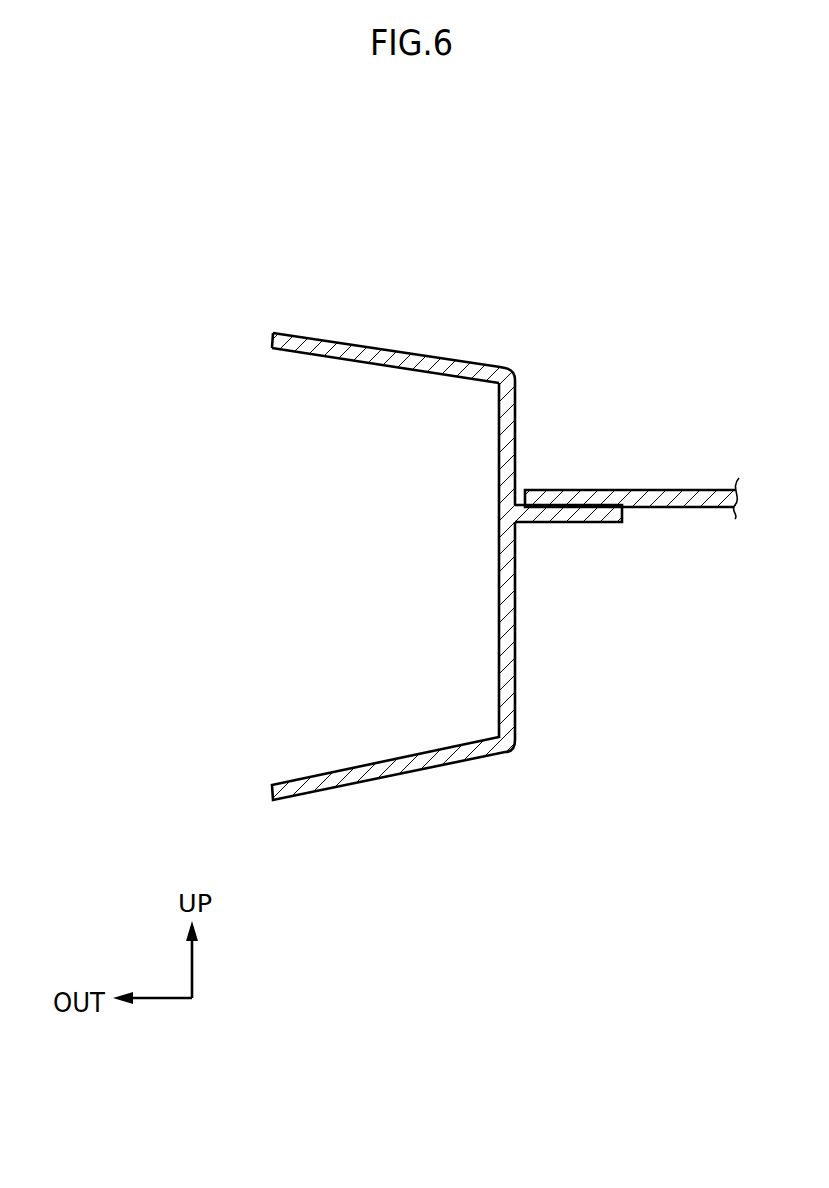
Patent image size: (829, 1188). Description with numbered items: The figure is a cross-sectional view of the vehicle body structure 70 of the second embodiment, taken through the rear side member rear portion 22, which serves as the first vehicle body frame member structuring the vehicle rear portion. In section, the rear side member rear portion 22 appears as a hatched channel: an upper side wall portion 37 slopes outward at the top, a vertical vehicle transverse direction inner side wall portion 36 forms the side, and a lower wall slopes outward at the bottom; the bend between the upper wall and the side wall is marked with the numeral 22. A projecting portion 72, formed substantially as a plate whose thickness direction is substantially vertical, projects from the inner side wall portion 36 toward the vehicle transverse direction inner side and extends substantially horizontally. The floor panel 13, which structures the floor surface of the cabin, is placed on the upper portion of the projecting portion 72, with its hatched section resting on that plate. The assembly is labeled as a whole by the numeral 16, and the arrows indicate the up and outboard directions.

The side sill 16 is at (514, 148).
The vehicle body structure 70 is at (549, 242).
The upper side wall portion 37 is at (388, 351).
The rear side member rear portion 22 is at (514, 367).
The vehicle transverse direction inner side wall portion 36 is at (516, 598).
The projecting portion 72 is at (612, 521).
The floor panel 13 is at (666, 490).